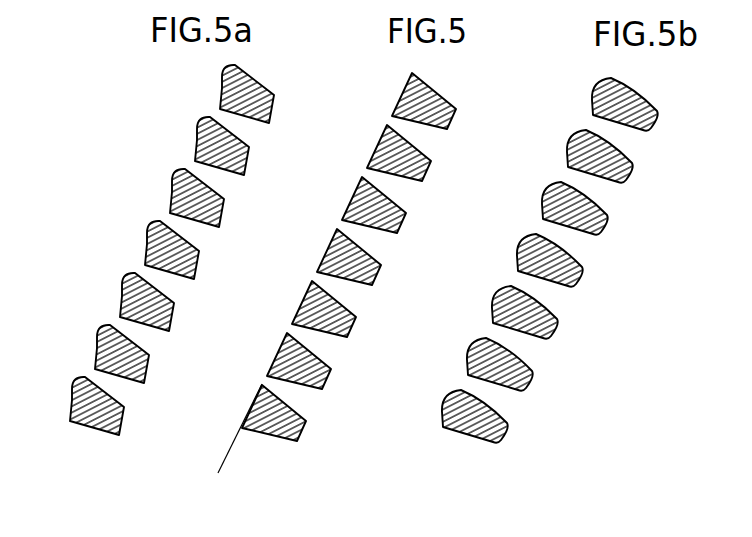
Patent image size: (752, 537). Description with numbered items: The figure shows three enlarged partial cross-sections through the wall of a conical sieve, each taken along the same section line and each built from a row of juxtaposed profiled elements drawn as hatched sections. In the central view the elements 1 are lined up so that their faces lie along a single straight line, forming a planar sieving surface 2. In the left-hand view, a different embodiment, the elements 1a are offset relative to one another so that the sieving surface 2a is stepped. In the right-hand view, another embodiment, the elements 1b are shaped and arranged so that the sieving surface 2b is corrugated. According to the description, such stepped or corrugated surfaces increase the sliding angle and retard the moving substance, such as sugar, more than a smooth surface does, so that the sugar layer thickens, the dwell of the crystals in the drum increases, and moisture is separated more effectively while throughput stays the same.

In FIG. 5, the element 1 is at (292, 422).
In FIG. 5, the sieving surface 2 is at (220, 457).
In FIG. 5A, the element 1a is at (87, 410).
In FIG. 5A, the sieving surface 2a is at (147, 249).
In FIG. 5B, the element 1b is at (487, 422).
In FIG. 5B, the sieving surface 2b is at (495, 297).